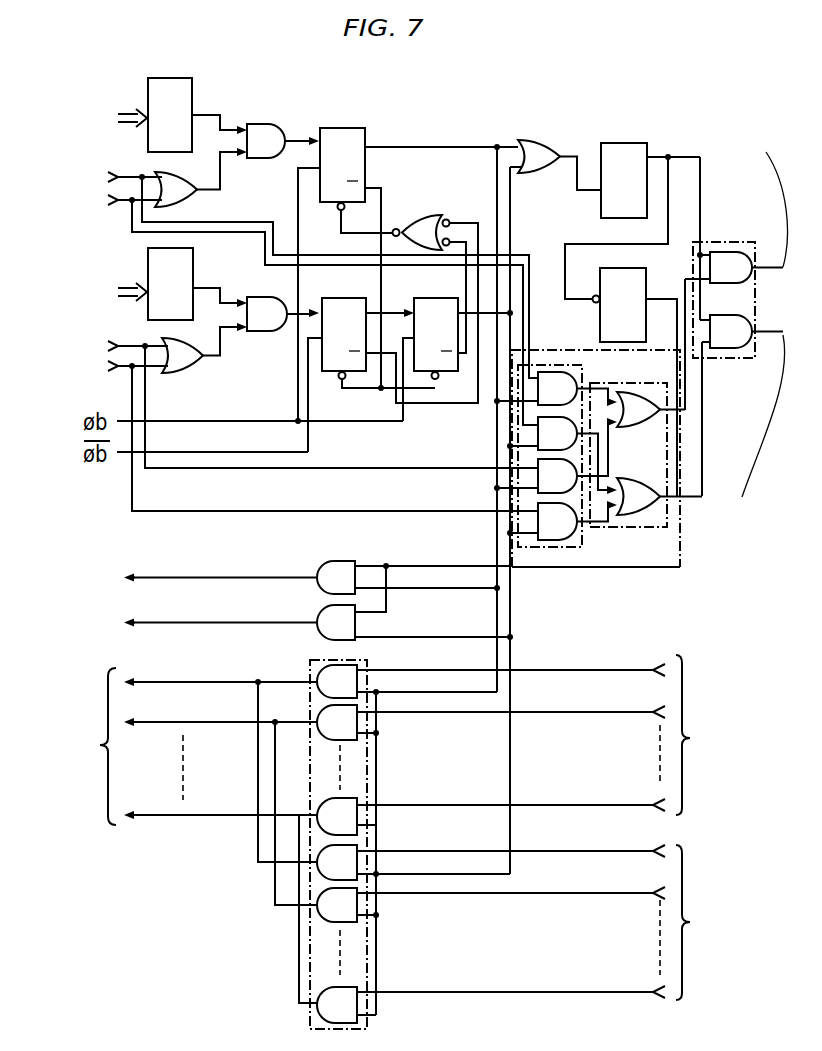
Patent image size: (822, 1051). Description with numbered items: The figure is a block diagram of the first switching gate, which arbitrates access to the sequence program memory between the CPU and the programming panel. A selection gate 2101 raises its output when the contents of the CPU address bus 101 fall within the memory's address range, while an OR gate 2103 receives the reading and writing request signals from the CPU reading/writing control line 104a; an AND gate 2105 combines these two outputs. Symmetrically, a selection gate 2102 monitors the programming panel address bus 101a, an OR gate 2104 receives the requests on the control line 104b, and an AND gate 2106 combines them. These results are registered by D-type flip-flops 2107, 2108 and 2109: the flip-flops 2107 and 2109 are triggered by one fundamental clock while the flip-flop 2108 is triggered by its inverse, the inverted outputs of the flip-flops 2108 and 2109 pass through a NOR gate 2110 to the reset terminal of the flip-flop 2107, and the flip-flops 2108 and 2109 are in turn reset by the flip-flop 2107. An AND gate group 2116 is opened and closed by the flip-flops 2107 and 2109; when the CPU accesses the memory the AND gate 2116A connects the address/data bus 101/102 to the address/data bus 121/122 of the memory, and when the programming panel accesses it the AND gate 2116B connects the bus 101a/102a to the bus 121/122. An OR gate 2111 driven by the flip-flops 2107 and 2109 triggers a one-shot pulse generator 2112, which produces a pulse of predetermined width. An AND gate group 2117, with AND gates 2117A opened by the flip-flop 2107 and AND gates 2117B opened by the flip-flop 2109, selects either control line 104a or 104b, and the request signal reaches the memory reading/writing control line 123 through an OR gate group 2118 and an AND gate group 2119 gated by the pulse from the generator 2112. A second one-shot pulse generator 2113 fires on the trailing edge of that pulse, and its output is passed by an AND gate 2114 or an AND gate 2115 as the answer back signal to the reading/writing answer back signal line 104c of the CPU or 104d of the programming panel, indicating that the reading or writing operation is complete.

The address bus 101 is at (402, 419).
The address bus 101a is at (397, 588).
The data bus 102 is at (539, 735).
The data bus 102a is at (544, 922).
The reading/writing control line 104a is at (285, 284).
The reading/writing control line 104b is at (285, 412).
The reading/writing answer back signal line 104c is at (100, 577).
The reading/writing answer back signal line 104d is at (100, 623).
The address bus 121 is at (191, 791).
The data bus 122 is at (191, 835).
The reading/writing control line 123 is at (770, 300).
The selection gate 2101 is at (187, 89).
The selection gate 2102 is at (188, 265).
The OR gate 2103 is at (183, 194).
The OR gate 2104 is at (190, 365).
The AND gate 2105 is at (266, 126).
The AND gate 2106 is at (272, 290).
The D-type flip-flop 2107 is at (348, 130).
The D-type flip-flop 2108 is at (352, 284).
The D-type flip-flop 2109 is at (447, 284).
The NOR gate 2110 is at (416, 216).
The OR gate 2111 is at (551, 130).
The one-shot pulse generator 2112 is at (628, 150).
The one-shot pulse generator 2113 is at (620, 270).
The AND gate 2114 is at (340, 561).
The AND gate 2115 is at (352, 624).
The AND gate group 2116 is at (424, 669).
The AND gate 2116A is at (338, 763).
The AND gate 2116B is at (340, 957).
The AND gate group 2117 is at (575, 339).
The AND gates 2117A is at (567, 384).
The AND gates 2117B is at (543, 438).
The OR gate group 2118 is at (685, 409).
The AND gate group 2119 is at (748, 242).